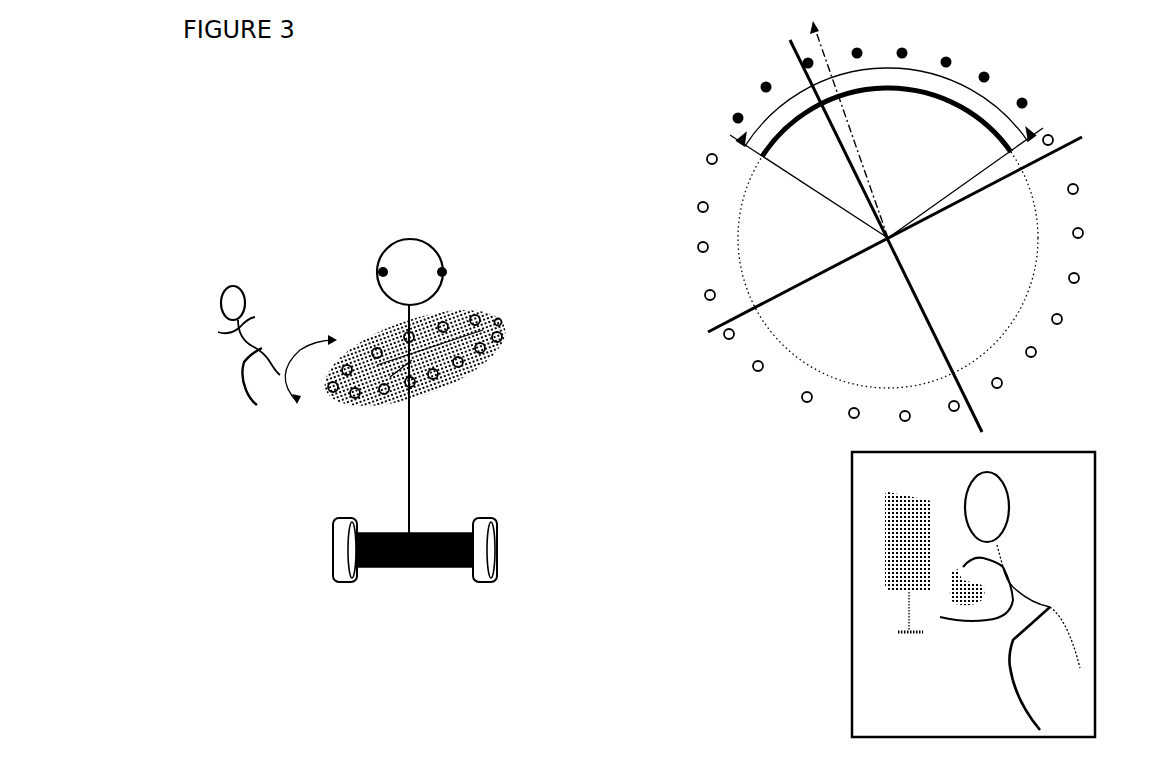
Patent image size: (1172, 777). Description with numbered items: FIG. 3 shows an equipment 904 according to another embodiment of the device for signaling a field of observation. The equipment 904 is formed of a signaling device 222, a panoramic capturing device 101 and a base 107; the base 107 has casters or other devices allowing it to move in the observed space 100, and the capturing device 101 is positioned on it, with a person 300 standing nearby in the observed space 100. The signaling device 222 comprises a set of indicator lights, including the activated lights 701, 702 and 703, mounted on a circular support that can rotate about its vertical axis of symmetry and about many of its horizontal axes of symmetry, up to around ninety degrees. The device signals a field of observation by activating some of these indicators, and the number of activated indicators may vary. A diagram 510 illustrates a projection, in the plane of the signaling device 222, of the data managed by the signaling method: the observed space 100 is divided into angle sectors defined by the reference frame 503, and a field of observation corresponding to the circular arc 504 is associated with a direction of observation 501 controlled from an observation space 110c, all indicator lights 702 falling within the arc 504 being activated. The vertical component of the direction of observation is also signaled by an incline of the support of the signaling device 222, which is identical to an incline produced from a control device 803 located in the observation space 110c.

The observed space 100 is at (638, 291).
The capturing device 101 is at (438, 253).
The equipment 904 is at (353, 270).
The base 107 is at (420, 452).
The indicator light 701 is at (480, 310).
The indicator light 702 is at (503, 317).
The indicator light 703 is at (505, 335).
The signaling device 222 is at (478, 367).
The person / user 300 is at (223, 287).
The diagram 510 is at (705, 82).
The circular arc / field of observation 504 is at (965, 110).
The direction of observation 501 is at (828, 53).
The reference frame 503 is at (1067, 157).
The observation space 110c is at (973, 594).
The control device 803 is at (953, 613).